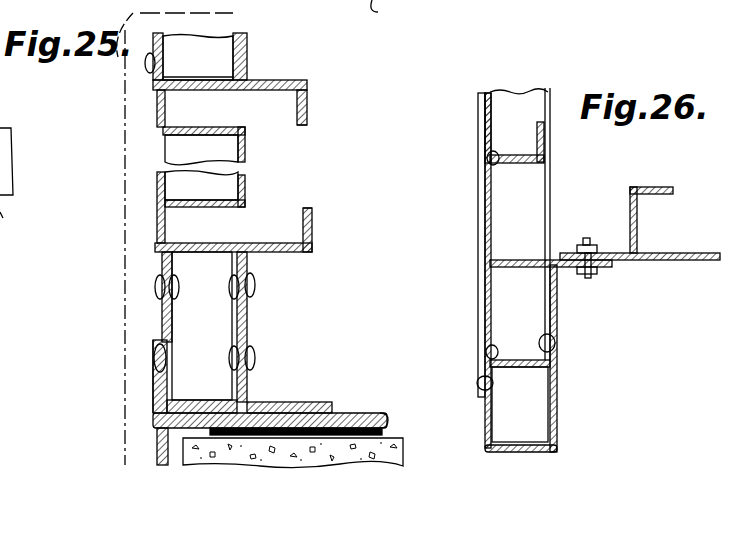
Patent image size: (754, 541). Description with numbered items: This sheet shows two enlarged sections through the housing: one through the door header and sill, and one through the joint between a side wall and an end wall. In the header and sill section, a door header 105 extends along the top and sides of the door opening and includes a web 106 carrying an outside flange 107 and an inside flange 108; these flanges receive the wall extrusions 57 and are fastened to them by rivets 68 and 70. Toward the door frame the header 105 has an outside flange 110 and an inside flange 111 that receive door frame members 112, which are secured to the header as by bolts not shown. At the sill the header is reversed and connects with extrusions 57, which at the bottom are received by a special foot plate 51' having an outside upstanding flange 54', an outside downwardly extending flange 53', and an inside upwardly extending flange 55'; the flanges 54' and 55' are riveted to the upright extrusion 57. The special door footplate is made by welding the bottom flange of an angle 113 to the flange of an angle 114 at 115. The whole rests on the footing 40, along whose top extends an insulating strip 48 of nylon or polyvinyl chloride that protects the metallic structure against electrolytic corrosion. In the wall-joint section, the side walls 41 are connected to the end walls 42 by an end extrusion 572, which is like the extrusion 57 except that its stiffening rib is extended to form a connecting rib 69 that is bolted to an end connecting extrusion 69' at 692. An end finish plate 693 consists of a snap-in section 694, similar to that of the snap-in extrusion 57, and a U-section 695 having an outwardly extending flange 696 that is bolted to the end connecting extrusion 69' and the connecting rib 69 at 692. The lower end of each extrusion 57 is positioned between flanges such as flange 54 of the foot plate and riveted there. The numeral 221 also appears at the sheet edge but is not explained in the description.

In FIG. 25, the footings 40 is at (400, 452).
In FIG. 26, the side walls 41 is at (487, 130).
In FIG. 25, the end walls 42 is at (147, 72).
In FIG. 26, the end walls 42 is at (680, 259).
In FIG. 25, the insulating strip 48 is at (385, 431).
In FIG. 25, the special foot plate 51' is at (110, 376).
In FIG. 25, the outside downwardly extending flange 53' is at (112, 445).
In FIG. 26, the flange of the foot plate 54 is at (460, 245).
In FIG. 25, the outside upstanding flange 54' is at (116, 370).
In FIG. 25, the inside upwardly extending flange 55' is at (271, 357).
In FIG. 25, the extrusion 57 is at (241, 62).
In FIG. 26, the end extrusion 572 is at (486, 282).
In FIG. 25, the rivet 68 is at (182, 60).
In FIG. 26, the connecting rib 69 is at (551, 247).
In FIG. 26, the end connecting extrusion 69' is at (624, 220).
In FIG. 26, the bolted connection 692 is at (588, 275).
In FIG. 26, the end finish plate 693 is at (558, 428).
In FIG. 26, the snap-in section 694 is at (518, 372).
In FIG. 26, the U-section 695 is at (553, 373).
In FIG. 26, the outwardly extending flange 696 is at (593, 268).
In FIG. 25, the rivet 70 is at (240, 58).
In FIG. 25, the door header 105 is at (310, 95).
In FIG. 25, the web 106 is at (270, 243).
In FIG. 25, the outside flange 107 is at (153, 82).
In FIG. 25, the inside flange 108 is at (247, 71).
In FIG. 25, the outside flange 110 is at (160, 120).
In FIG. 25, the inside flange 111 is at (308, 121).
In FIG. 25, the door frame members 112 is at (212, 147).
In FIG. 25, the angle 113 is at (298, 391).
In FIG. 25, the angle 114 is at (375, 404).
In FIG. 25, the weld 115 is at (337, 412).
In FIG. 25, the member 221 is at (398, 16).